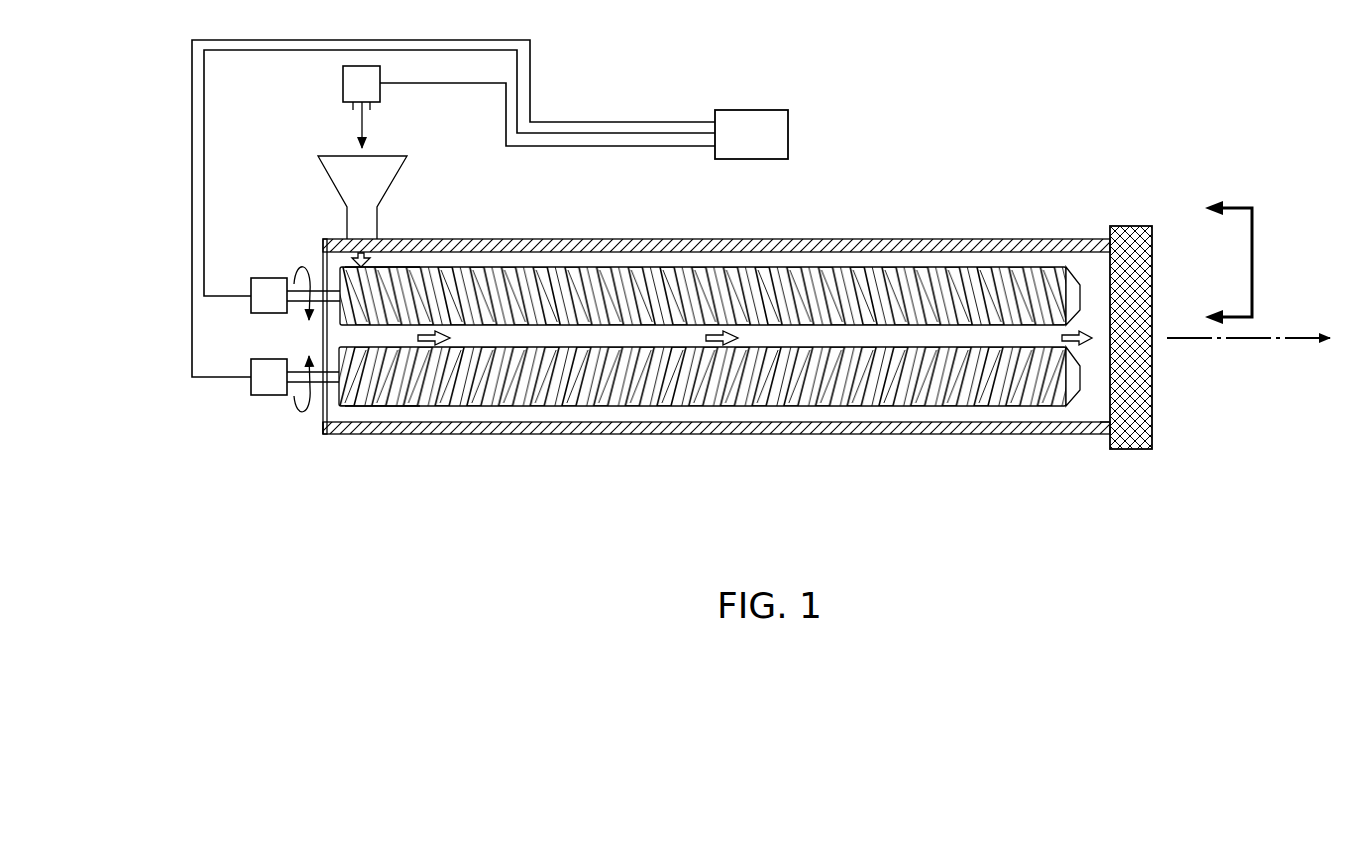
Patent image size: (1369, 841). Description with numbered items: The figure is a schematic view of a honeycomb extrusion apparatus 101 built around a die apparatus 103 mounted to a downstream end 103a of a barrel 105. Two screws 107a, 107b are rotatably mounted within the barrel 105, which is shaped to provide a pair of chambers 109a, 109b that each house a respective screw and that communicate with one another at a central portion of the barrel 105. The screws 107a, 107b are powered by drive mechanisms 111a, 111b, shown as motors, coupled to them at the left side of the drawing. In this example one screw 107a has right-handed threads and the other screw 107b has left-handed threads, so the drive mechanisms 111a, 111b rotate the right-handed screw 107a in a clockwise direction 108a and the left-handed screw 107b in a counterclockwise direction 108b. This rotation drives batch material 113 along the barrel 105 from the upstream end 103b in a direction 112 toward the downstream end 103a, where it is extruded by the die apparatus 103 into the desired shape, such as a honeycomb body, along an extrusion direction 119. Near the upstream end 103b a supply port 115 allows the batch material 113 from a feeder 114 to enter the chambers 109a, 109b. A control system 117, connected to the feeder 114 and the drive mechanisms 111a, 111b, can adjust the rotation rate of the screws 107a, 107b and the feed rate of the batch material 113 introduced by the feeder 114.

The honeycomb extrusion apparatus 101 is at (762, 273).
The die apparatus 103 is at (1157, 283).
The downstream end 103a is at (1070, 482).
The upstream end 103b is at (363, 482).
The barrel 105 is at (770, 237).
The screw 107a is at (540, 275).
The screw 107b is at (537, 385).
The chamber 109a is at (398, 263).
The chamber 109b is at (383, 412).
The clockwise direction 108a is at (293, 280).
The counterclockwise direction 108b is at (293, 398).
The drive mechanism 111a is at (262, 278).
The drive mechanism 111b is at (262, 396).
The direction 112 is at (738, 358).
The batch material 113 is at (357, 126).
The feeder 114 is at (382, 94).
The supply port 115 is at (400, 181).
The control system 117 is at (506, 190).
The extrusion direction 119 is at (1296, 340).